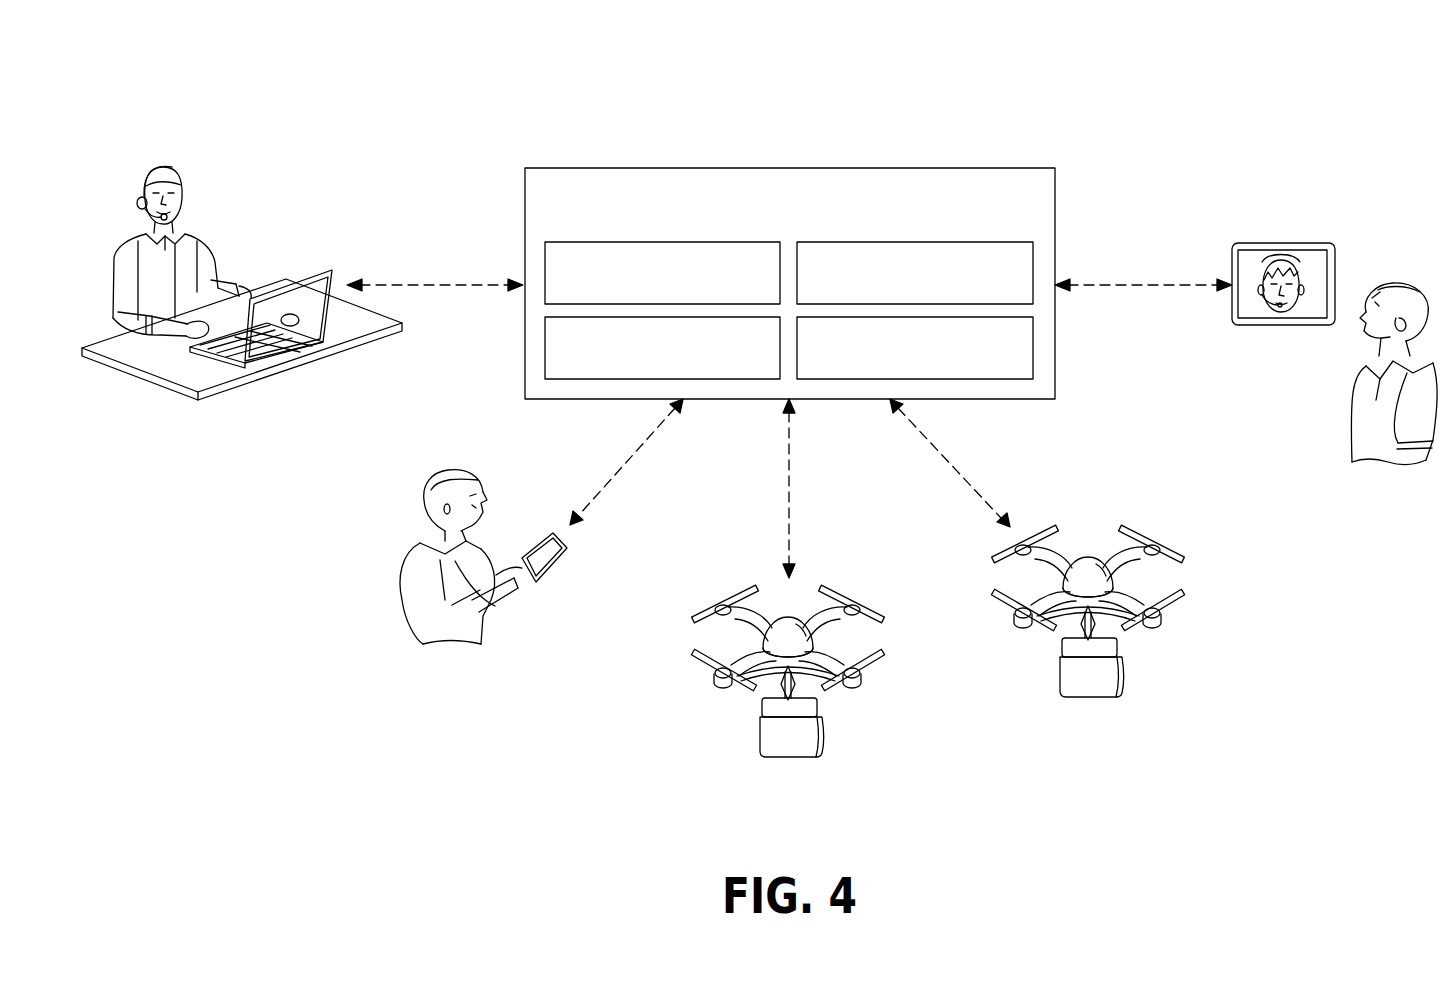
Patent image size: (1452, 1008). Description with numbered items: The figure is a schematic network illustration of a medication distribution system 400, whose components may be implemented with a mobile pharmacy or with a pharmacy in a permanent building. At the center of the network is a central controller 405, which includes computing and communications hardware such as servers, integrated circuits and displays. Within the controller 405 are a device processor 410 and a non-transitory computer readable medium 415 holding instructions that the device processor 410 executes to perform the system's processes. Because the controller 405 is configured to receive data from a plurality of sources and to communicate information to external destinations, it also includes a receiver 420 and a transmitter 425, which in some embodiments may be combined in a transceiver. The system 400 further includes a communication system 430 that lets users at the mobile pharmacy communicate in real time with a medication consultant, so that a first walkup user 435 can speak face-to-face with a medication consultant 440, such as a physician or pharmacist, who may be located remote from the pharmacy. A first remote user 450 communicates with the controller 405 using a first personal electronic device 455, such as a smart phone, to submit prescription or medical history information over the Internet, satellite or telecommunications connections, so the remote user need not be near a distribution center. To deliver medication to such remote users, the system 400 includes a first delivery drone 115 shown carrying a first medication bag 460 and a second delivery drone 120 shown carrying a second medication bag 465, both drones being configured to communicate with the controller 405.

The medication distribution system 400 is at (952, 104).
The central controller 405 is at (677, 167).
The device processor 410 is at (524, 258).
The non-transitory computer readable medium 415 is at (1056, 258).
The receiver 420 is at (524, 350).
The transmitter 425 is at (1056, 350).
The communication system 430 is at (1280, 243).
The first walkup user 435 is at (1400, 273).
The medication consultant 440 is at (222, 212).
The first remote user 450 is at (407, 515).
The first personal electronic device 455 is at (538, 548).
The first delivery drone 115 is at (675, 638).
The second delivery drone 120 is at (1192, 578).
The first medication bag 460 is at (788, 741).
The second medication bag 465 is at (1088, 682).